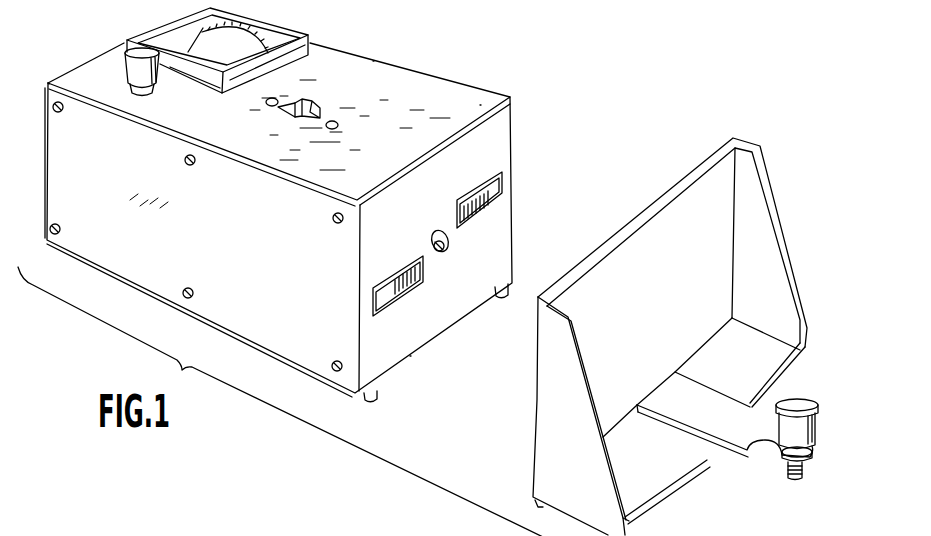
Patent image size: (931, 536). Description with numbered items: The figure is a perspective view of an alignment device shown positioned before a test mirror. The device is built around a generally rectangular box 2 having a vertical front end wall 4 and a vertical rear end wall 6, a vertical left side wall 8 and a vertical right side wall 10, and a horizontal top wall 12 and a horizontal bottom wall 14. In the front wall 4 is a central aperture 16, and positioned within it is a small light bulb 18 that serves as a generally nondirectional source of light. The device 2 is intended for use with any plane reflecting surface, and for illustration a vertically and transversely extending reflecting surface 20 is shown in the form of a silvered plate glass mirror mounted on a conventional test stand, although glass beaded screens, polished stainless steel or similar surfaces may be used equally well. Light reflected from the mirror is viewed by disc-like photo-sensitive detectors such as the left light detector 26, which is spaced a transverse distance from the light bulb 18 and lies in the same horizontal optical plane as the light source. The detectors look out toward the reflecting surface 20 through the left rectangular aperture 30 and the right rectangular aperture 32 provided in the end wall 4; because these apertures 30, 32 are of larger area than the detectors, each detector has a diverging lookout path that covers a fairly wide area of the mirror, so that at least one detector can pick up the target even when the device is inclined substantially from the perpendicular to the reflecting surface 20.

The box 2 is at (469, 72).
The front end wall 4 is at (460, 302).
The rear end wall 6 is at (75, 68).
The left side wall 8 is at (373, 61).
The right side wall 10 is at (167, 278).
The top wall 12 is at (480, 105).
The bottom wall 14 is at (410, 358).
The central aperture 16 is at (445, 228).
The light bulb 18 is at (445, 250).
The reflecting surface 20 is at (662, 192).
The left light detector 26 is at (280, 401).
The left rectangular aperture 30 is at (490, 206).
The right rectangular aperture 32 is at (380, 297).